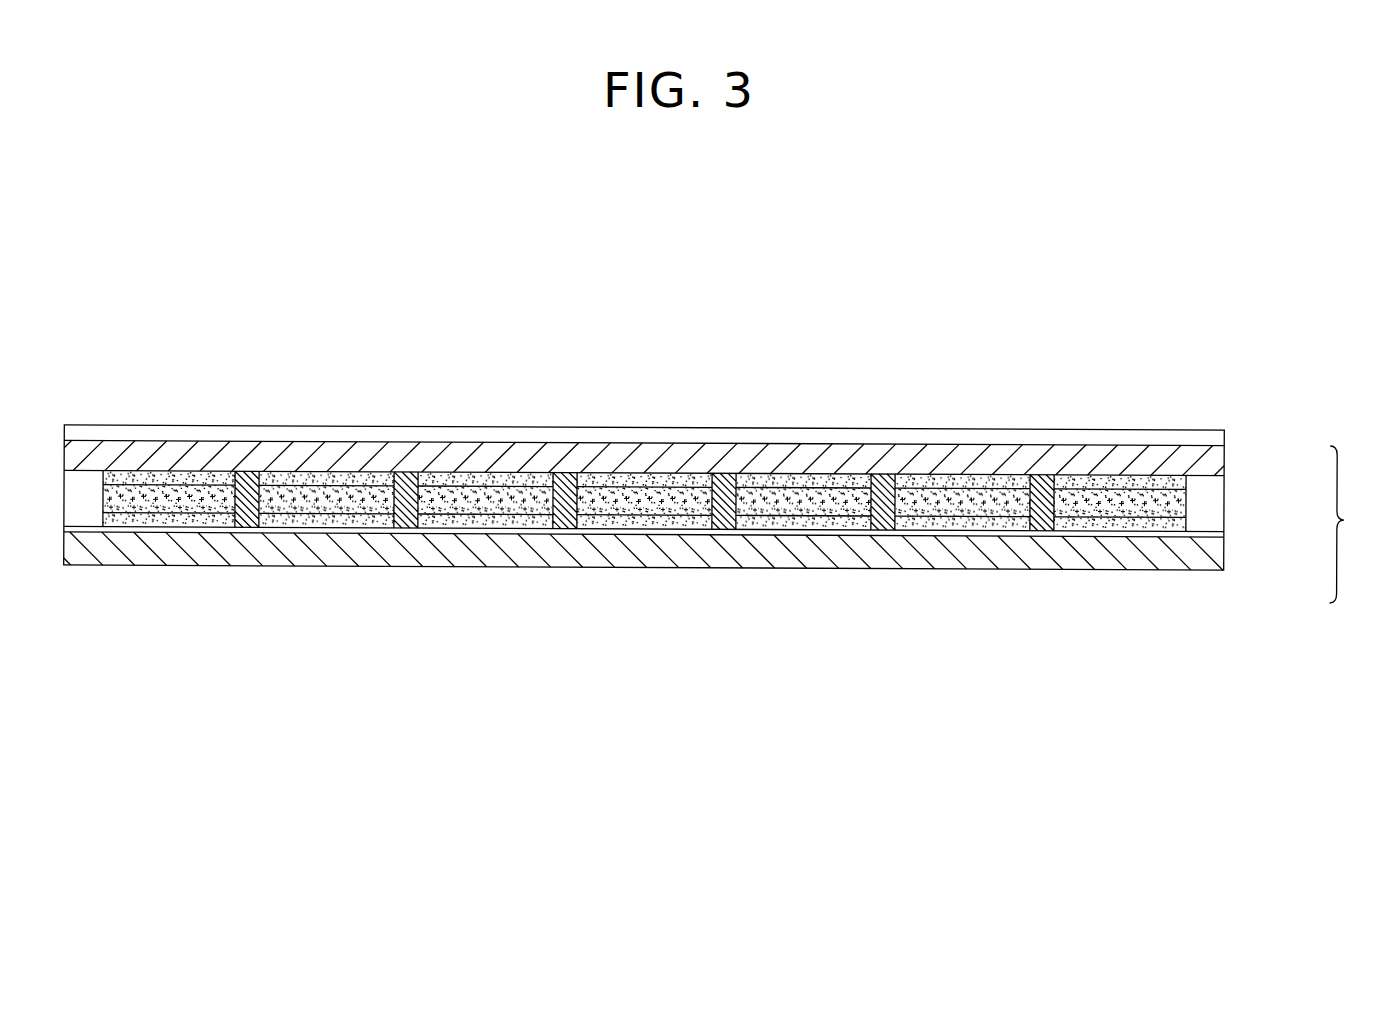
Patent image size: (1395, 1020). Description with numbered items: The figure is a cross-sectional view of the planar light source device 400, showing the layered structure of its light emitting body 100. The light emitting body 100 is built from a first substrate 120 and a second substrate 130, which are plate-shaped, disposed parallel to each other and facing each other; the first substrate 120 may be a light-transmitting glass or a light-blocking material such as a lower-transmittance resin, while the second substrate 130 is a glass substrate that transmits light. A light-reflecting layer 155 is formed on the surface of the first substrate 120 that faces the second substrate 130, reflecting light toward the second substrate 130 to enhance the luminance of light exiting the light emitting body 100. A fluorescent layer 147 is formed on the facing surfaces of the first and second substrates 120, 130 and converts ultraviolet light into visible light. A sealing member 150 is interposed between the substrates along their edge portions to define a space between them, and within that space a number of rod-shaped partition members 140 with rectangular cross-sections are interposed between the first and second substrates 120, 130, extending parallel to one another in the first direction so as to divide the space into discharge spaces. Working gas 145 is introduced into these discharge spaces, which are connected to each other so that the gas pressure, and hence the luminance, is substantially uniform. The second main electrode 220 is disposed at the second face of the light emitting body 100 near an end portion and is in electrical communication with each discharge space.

The light emitting body 100 is at (1361, 524).
The first substrate 120 is at (1213, 560).
The second substrate 130 is at (1213, 460).
The partition member 140 is at (1043, 529).
The working gas 145 is at (750, 484).
The fluorescent layer 147 is at (842, 483).
The sealing member 150 is at (694, 497).
The light-reflecting layer 155 is at (1213, 533).
The second main electrode 220 is at (1190, 438).
The planar light source device 400 is at (940, 412).